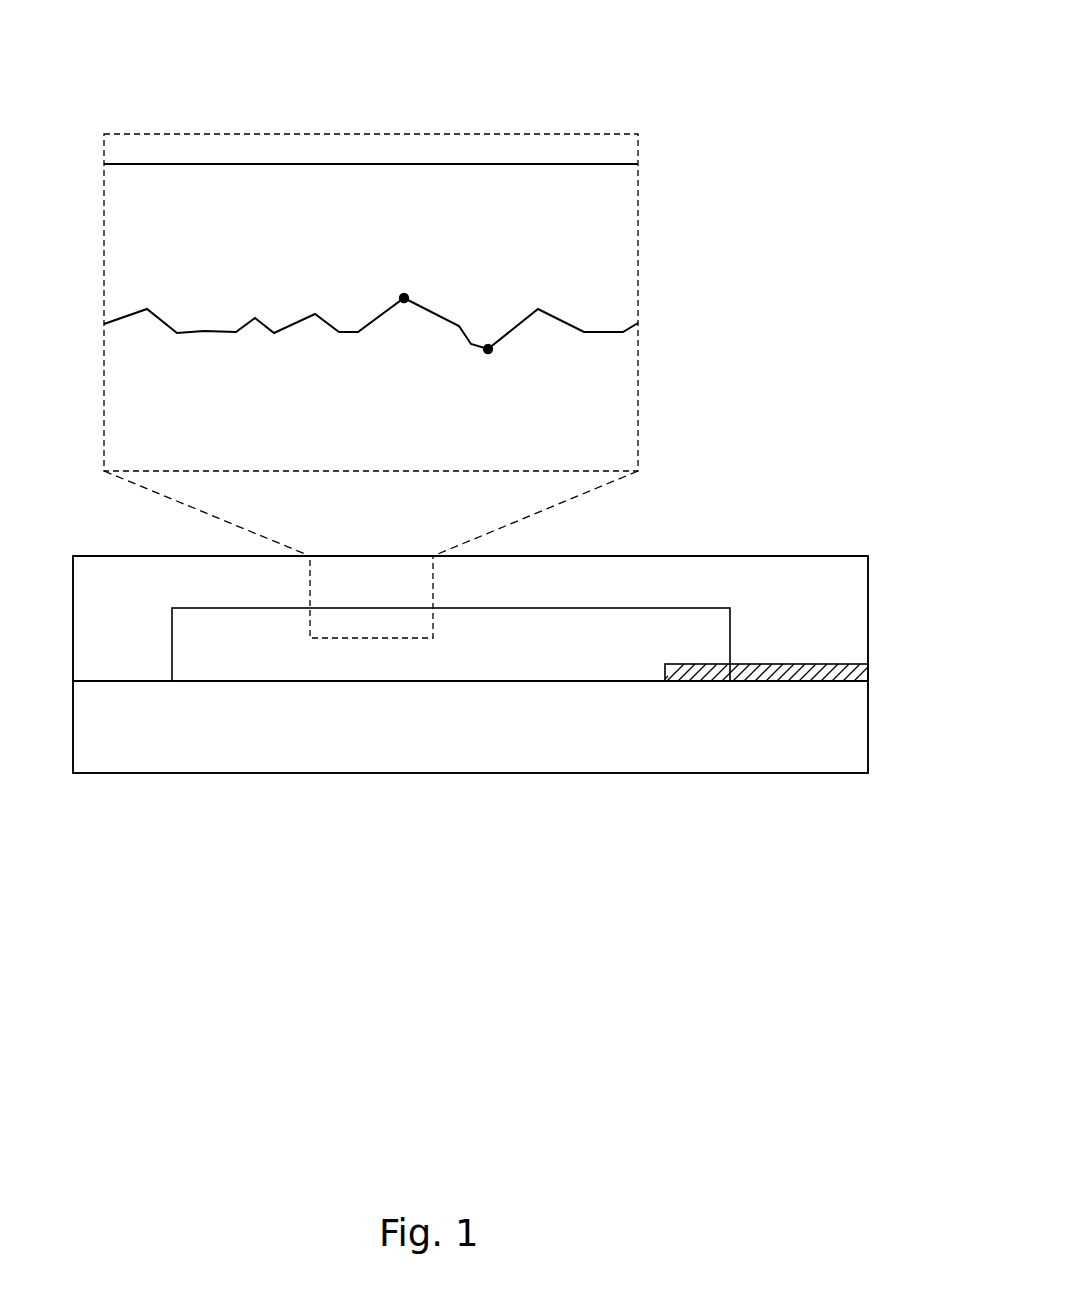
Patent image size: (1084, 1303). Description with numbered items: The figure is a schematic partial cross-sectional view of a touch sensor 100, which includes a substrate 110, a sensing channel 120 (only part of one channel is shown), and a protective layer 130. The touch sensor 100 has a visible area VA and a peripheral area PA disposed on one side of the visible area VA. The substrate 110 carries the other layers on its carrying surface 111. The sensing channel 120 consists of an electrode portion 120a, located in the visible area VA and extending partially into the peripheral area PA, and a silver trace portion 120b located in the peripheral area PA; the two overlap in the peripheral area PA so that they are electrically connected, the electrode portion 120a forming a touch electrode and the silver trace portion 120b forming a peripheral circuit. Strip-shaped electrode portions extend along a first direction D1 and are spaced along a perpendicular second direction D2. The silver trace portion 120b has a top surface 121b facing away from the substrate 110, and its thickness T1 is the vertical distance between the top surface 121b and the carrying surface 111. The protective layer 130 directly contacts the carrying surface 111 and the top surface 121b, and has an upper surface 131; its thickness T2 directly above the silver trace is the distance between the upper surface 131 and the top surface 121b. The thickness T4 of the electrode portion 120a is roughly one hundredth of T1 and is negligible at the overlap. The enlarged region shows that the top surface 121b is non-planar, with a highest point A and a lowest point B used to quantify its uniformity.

The touch sensor 100 is at (857, 42).
The substrate 110 is at (857, 730).
The carrying surface 111 is at (216, 696).
The sensing channel 120 is at (795, 832).
The electrode portion 120a is at (753, 678).
The silver trace portion 120b is at (610, 670).
The top surface of the silver trace portion 121b is at (366, 625).
The protective layer 130 is at (857, 613).
The upper surface of the protective layer 131 is at (848, 549).
The highest point A is at (403, 292).
The lowest point B is at (487, 343).
The thickness of the silver trace portion T1 is at (575, 608).
The thickness of the protective layer T2 is at (575, 556).
The thickness of the electrode portion T4 is at (647, 705).
The peripheral area PA is at (773, 505).
The visible area VA is at (729, 785).
The first direction D1 is at (121, 952).
The second direction D2 is at (90, 967).